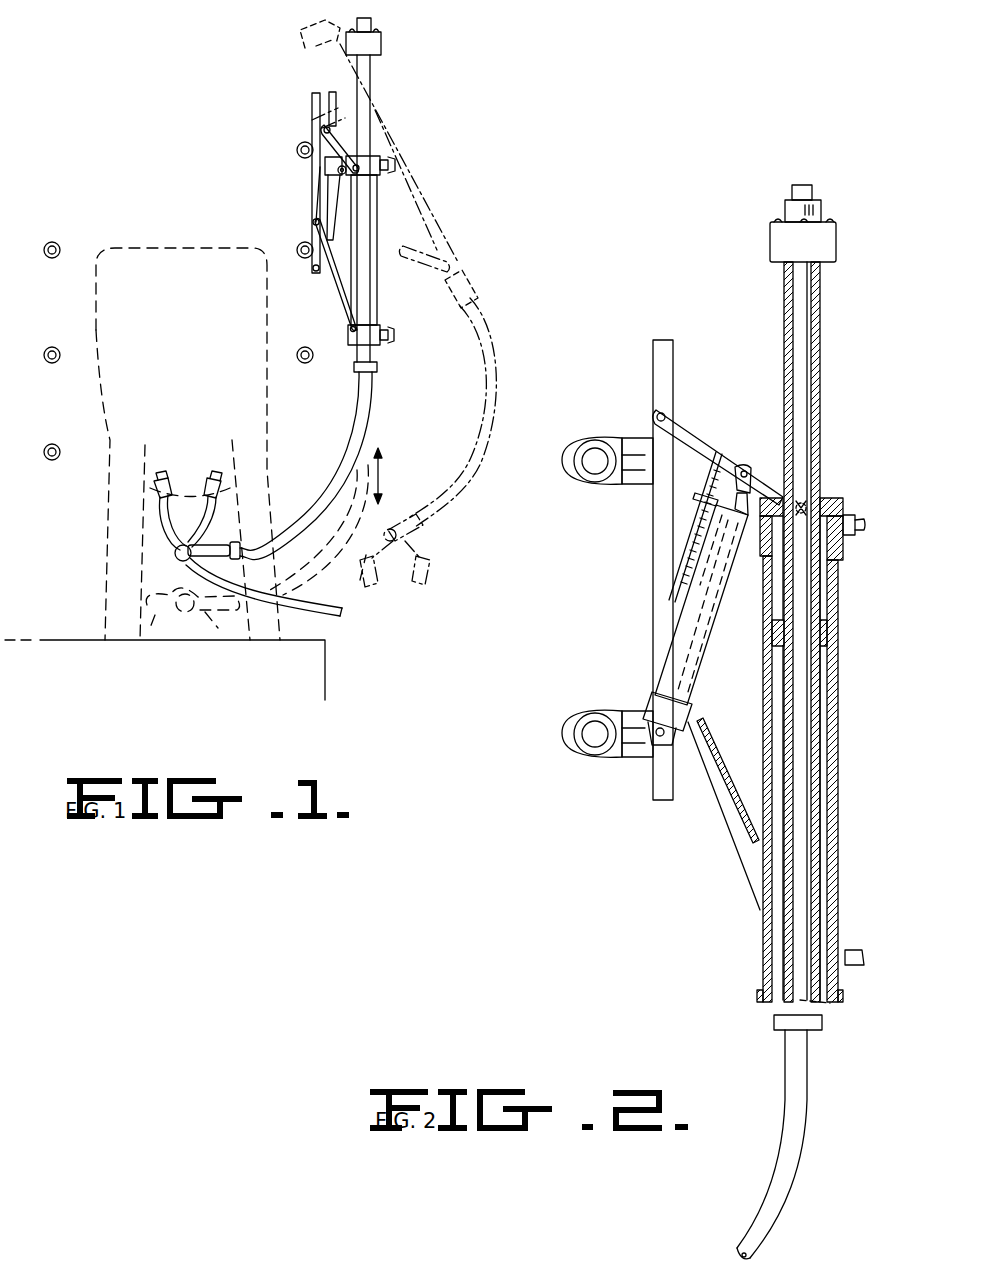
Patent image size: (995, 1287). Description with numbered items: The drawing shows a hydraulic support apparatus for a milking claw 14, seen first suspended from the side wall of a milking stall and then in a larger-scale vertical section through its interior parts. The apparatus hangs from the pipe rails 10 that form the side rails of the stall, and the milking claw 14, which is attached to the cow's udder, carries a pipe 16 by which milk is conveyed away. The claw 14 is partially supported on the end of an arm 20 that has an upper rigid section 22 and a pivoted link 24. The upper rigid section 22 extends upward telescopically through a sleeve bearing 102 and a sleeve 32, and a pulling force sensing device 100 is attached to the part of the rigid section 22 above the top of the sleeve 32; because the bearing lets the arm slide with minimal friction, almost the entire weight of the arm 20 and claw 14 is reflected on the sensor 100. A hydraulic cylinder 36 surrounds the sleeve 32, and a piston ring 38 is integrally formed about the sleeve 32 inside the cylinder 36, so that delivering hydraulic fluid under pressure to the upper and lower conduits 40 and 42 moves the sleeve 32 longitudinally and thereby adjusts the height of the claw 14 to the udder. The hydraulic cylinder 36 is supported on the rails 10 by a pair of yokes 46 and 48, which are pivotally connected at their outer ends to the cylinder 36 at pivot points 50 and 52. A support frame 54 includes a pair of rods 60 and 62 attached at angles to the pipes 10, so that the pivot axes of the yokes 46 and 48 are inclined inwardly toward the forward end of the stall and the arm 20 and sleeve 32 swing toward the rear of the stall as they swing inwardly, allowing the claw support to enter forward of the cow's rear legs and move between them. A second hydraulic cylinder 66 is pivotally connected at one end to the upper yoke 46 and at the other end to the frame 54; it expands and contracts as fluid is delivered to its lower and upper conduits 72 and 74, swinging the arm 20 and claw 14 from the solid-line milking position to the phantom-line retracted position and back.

In FIG. 1, the pipe rails 10 is at (60, 244).
In FIG. 2, the pipe rails 10 is at (578, 485).
In FIG. 1, the milking claw 14 is at (160, 540).
In FIG. 1, the pipe 16 is at (342, 612).
In FIG. 1, the arm 20 is at (302, 513).
In FIG. 1, the upper rigid section 22 is at (352, 443).
In FIG. 1, the pivoted link 24 is at (212, 545).
In FIG. 1, the sleeve 32 is at (372, 80).
In FIG. 2, the sleeve 32 is at (784, 297).
In FIG. 1, the hydraulic cylinder 36 is at (378, 284).
In FIG. 2, the hydraulic cylinder 36 is at (838, 737).
In FIG. 2, the piston ring 38 is at (830, 632).
In FIG. 1, the upper conduit 40 is at (396, 165).
In FIG. 2, the upper conduit 40 is at (862, 520).
In FIG. 1, the lower conduit 42 is at (392, 332).
In FIG. 1, the upper yoke 46 is at (360, 150).
In FIG. 2, the upper yoke 46 is at (700, 438).
In FIG. 1, the lower yoke 48 is at (336, 290).
In FIG. 2, the lower yoke 48 is at (733, 832).
In FIG. 2, the pivot point 50 is at (811, 497).
In FIG. 2, the pivot point 52 is at (820, 1003).
In FIG. 1, the support frame 54 is at (296, 220).
In FIG. 2, the support frame 54 is at (652, 539).
In FIG. 1, the rod 60 is at (311, 97).
In FIG. 1, the rod 62 is at (330, 90).
In FIG. 2, the rod 62 is at (660, 339).
In FIG. 1, the second hydraulic cylinder 66 is at (330, 195).
In FIG. 2, the second hydraulic cylinder 66 is at (705, 645).
In FIG. 2, the lower conduit 72 is at (712, 700).
In FIG. 1, the upper conduit 74 is at (346, 172).
In FIG. 2, the upper conduit 74 is at (752, 532).
In FIG. 1, the pulling force sensing device 100 is at (382, 40).
In FIG. 2, the pulling force sensing device 100 is at (769, 241).
In FIG. 1, the sleeve bearing 102 is at (354, 372).
In FIG. 2, the sleeve bearing 102 is at (773, 1029).